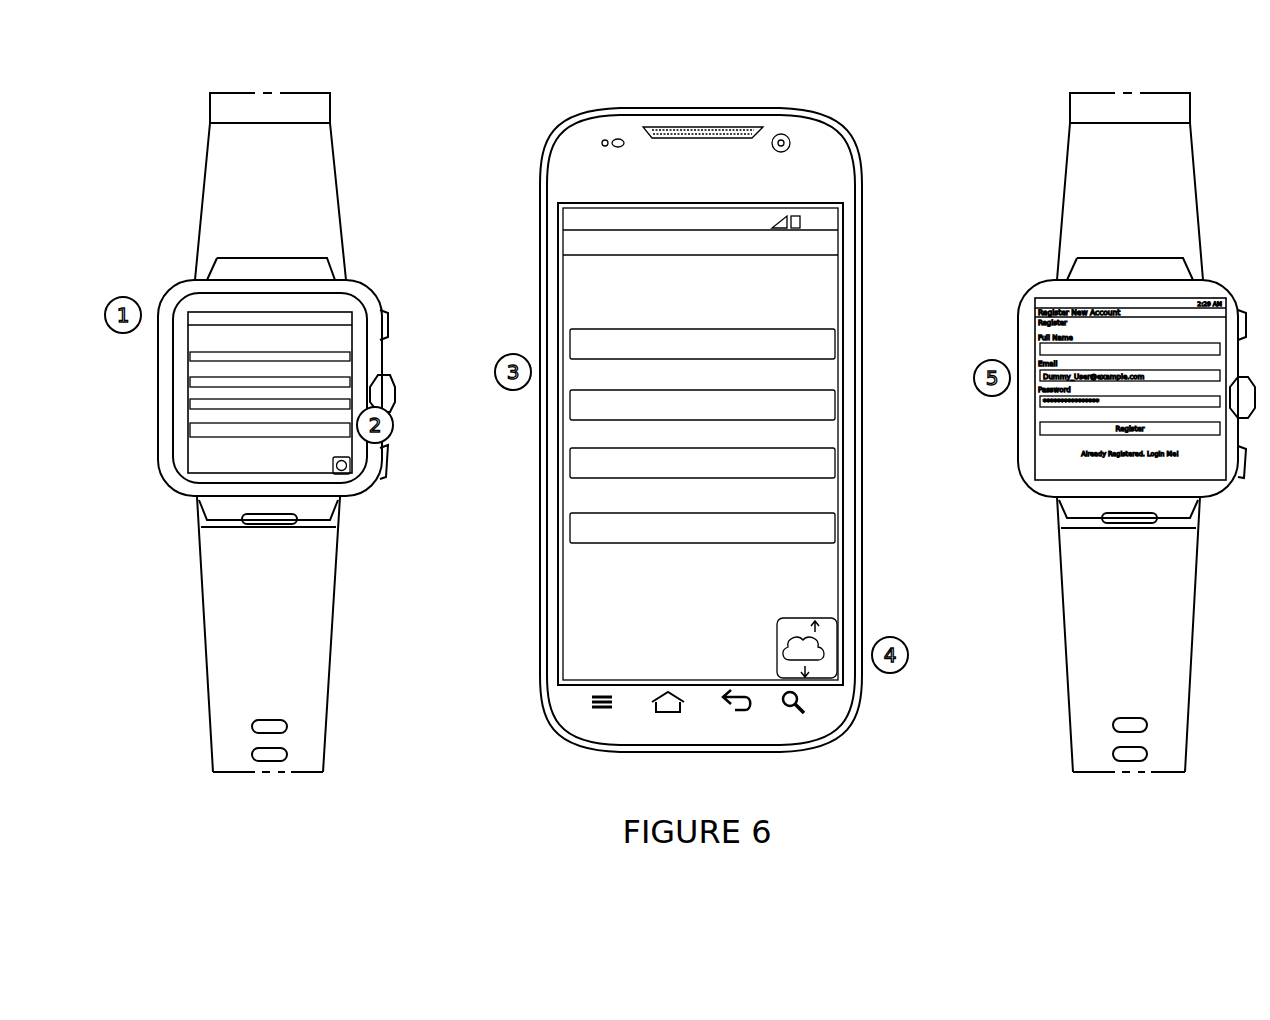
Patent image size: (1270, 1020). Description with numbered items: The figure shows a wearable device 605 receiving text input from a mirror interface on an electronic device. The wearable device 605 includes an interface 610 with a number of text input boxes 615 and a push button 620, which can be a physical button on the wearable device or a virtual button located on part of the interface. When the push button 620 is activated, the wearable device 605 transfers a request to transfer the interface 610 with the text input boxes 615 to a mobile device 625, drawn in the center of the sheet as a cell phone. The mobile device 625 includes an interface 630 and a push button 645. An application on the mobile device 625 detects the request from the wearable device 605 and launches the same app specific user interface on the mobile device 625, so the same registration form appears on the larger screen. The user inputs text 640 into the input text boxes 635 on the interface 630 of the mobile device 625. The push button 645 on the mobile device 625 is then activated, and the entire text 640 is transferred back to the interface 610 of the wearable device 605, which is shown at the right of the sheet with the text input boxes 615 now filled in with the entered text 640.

The wearable device 605 is at (369, 301).
The interface 610 is at (186, 455).
The text input boxes 615 is at (212, 381).
The push button 620 is at (350, 470).
The mobile device 625 is at (862, 185).
The interface 630 is at (561, 630).
The input text boxes 635 is at (835, 462).
The text 640 is at (572, 462).
The push button 645 is at (838, 620).